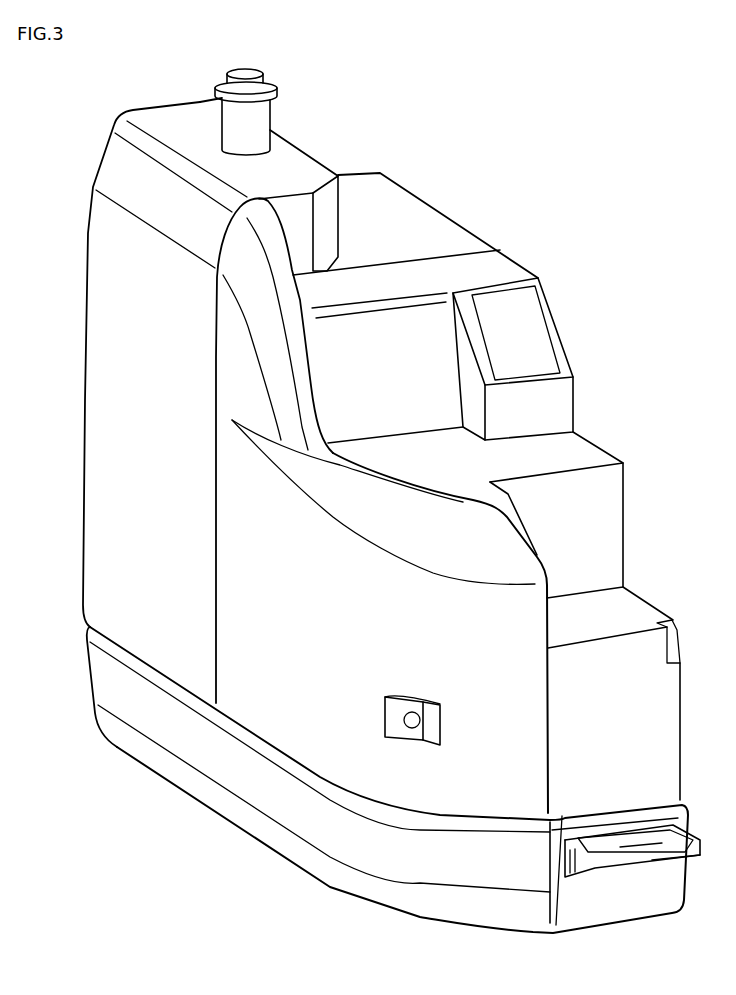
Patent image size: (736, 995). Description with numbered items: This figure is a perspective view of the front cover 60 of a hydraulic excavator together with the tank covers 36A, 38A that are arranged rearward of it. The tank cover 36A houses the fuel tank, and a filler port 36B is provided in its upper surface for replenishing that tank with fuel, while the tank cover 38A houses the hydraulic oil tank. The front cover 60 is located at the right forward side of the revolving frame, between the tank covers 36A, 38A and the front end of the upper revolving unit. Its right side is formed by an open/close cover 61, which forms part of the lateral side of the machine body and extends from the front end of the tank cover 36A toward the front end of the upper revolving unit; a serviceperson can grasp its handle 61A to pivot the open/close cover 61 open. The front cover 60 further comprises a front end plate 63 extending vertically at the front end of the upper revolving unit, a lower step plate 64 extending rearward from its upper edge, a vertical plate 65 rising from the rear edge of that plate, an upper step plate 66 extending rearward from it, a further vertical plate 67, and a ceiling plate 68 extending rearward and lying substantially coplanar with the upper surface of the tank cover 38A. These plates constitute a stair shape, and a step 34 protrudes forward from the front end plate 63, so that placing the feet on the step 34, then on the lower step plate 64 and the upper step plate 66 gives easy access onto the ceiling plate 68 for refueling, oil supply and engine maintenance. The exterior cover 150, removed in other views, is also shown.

The step 34 is at (642, 860).
The tank cover 36A is at (127, 293).
The filler port 36B is at (255, 118).
The tank cover 38A is at (418, 217).
The front cover 60 is at (619, 348).
The open/close cover 61 is at (387, 780).
The handle 61A is at (395, 718).
The front end plate 63 is at (658, 718).
The lower step plate 64 is at (622, 613).
The vertical plate 65 is at (578, 517).
The upper step plate 66 is at (572, 452).
The vertical plate 67 is at (415, 341).
The ceiling plate 68 is at (483, 275).
The exterior cover 150 is at (232, 758).